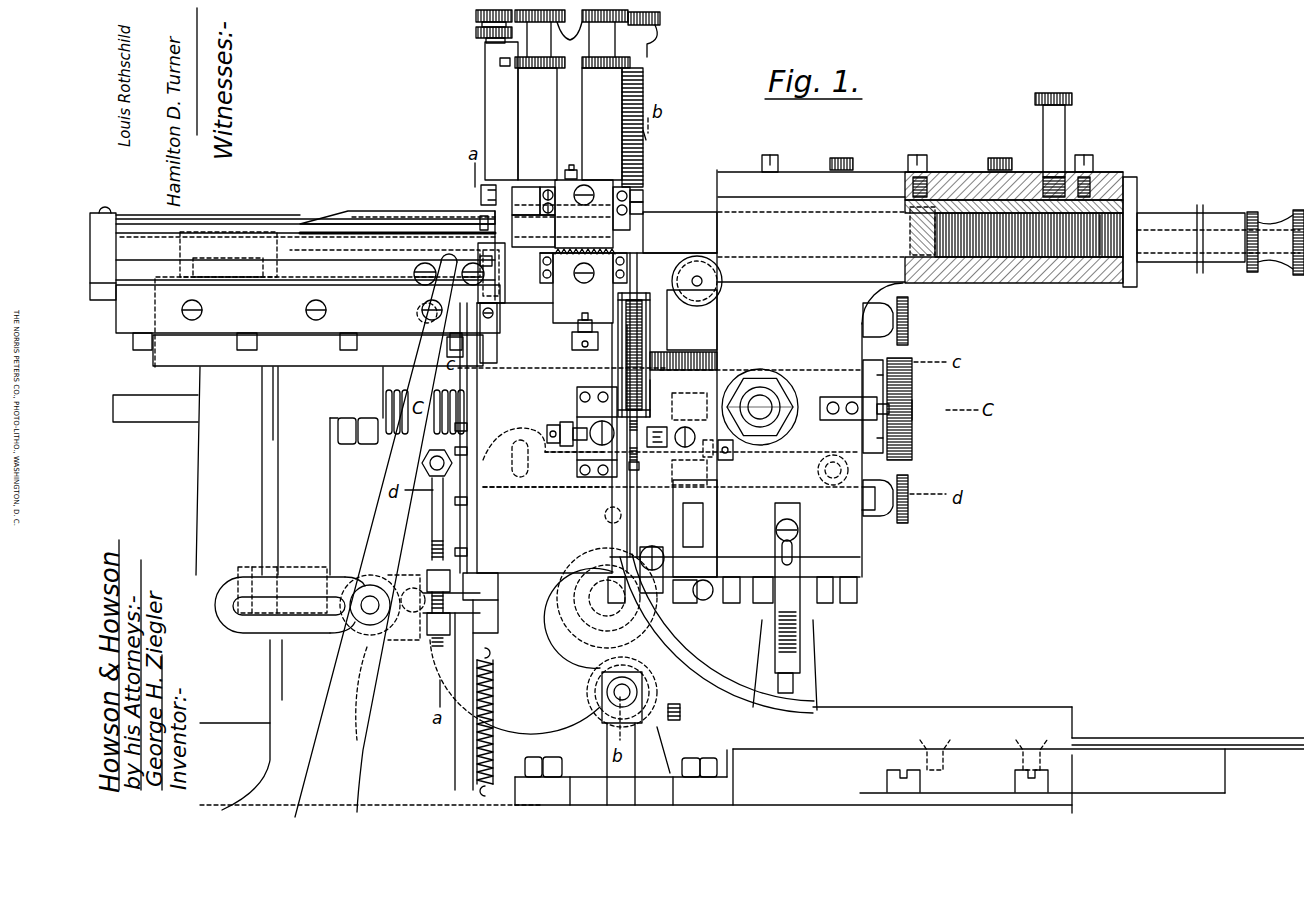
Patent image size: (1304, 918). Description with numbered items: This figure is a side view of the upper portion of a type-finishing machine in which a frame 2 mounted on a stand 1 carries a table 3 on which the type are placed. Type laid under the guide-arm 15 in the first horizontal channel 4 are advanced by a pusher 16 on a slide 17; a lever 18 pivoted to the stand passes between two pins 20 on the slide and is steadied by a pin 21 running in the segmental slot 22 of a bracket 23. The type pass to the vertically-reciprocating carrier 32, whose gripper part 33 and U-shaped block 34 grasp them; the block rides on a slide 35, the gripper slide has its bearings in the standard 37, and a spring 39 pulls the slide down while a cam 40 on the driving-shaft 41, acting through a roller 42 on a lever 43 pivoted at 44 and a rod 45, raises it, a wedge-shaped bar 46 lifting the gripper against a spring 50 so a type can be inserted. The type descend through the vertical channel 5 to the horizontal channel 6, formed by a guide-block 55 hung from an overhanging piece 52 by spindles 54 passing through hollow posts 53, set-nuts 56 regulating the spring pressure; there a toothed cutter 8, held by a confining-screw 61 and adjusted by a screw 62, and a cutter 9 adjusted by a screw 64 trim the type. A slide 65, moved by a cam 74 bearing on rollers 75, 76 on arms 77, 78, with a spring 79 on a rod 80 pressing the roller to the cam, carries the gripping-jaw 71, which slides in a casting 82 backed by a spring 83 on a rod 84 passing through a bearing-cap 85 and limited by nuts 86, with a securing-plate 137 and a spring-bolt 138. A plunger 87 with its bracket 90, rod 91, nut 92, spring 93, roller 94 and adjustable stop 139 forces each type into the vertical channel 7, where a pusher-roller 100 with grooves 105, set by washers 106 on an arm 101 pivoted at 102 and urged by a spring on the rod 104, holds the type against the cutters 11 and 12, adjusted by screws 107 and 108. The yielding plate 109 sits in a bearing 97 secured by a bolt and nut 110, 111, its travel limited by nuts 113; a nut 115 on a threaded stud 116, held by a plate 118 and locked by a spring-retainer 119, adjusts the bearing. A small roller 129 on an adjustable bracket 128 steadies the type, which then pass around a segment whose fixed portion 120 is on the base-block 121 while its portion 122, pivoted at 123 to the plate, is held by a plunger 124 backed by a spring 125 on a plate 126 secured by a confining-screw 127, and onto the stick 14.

The stand 1 is at (793, 788).
The frame 2 is at (547, 438).
The table 3 is at (254, 238).
The first horizontal channel 4 is at (408, 231).
The vertical channel 5 is at (483, 222).
The horizontal channel 6 is at (532, 252).
The vertical channel 7 is at (638, 284).
The cutter 8 is at (592, 217).
The cutter 9 is at (628, 288).
The cutter 11 is at (622, 442).
The cutter 12 is at (661, 427).
The stick 14 is at (1188, 731).
The guide-arm 15 is at (360, 216).
The pusher 16 is at (222, 220).
The slide 17 is at (308, 312).
The lever 18 is at (376, 535).
The pins 20 is at (425, 263).
The pin 21 is at (375, 612).
The segmental slot 22 is at (320, 602).
The bracket 23 is at (370, 725).
The vertically-reciprocating carrier 32 is at (482, 259).
The gripper part 33 is at (494, 184).
The U-shaped block 34 is at (497, 330).
The slide 35 is at (470, 515).
The standard 37 is at (501, 111).
The spring 39 is at (494, 682).
The cam 40 is at (567, 640).
The driving-shaft 41 is at (612, 598).
The roller 42 is at (606, 514).
The lever 43 is at (671, 469).
The pivot 44 is at (835, 466).
The rod 45 is at (544, 457).
The wedge-shaped bar 46 is at (433, 524).
The spring 50 is at (500, 62).
The overhanging piece 52 is at (533, 201).
The hollow posts 53 is at (570, 124).
The spindles 54 is at (572, 39).
The guide-block 55 is at (562, 226).
The set-nuts 56 is at (570, 31).
The confining-screw 61 is at (590, 200).
The screw 62 is at (572, 168).
The screw 64 is at (572, 343).
The slide 65 is at (590, 282).
The gripping-jaw 71 is at (916, 232).
The cam 74 is at (515, 687).
The roller 75 is at (430, 572).
The roller 76 is at (706, 602).
The arm 77 is at (248, 471).
The arm 78 is at (810, 618).
The spring 79 is at (388, 436).
The rod 80 is at (430, 372).
The casting 82 is at (920, 218).
The spring 83 is at (1032, 258).
The rod 84 is at (1100, 258).
The bearing-cap 85 is at (1172, 216).
The nuts 86 is at (1265, 216).
The plunger 87 is at (643, 192).
The bracket 90 is at (645, 208).
The rod 91 is at (643, 100).
The nut 92 is at (658, 24).
The spring 93 is at (644, 136).
The roller 94 is at (647, 713).
The bearing 97 is at (755, 386).
The pusher-roller 100 is at (617, 386).
The arm 101 is at (692, 320).
The pivot 102 is at (704, 522).
The rod 104 is at (703, 284).
The grooves 105 is at (667, 398).
The washers 106 is at (683, 352).
The screw 107 is at (580, 432).
The screw 108 is at (730, 456).
The plate 109 is at (678, 414).
The bolt 110 is at (760, 407).
The nut 111 is at (767, 380).
The nuts 113 is at (908, 318).
The nut 115 is at (912, 370).
The threaded stud 116 is at (912, 420).
The plate 118 is at (866, 380).
The spring-retainer 119 is at (913, 410).
The fixed portion of segment 120 is at (676, 720).
The base-block 121 is at (1018, 760).
The pivoted portion of segment 122 is at (717, 633).
The pivot 123 is at (656, 570).
The plunger 124 is at (794, 683).
The spring 125 is at (800, 650).
The plate 126 is at (790, 558).
The confining-screw 127 is at (798, 530).
The adjustable bracket 128 is at (690, 439).
The small roller 129 is at (642, 466).
The securing-plate 137 is at (1127, 182).
The spring-bolt 138 is at (1042, 134).
The adjustable stop 139 is at (666, 565).